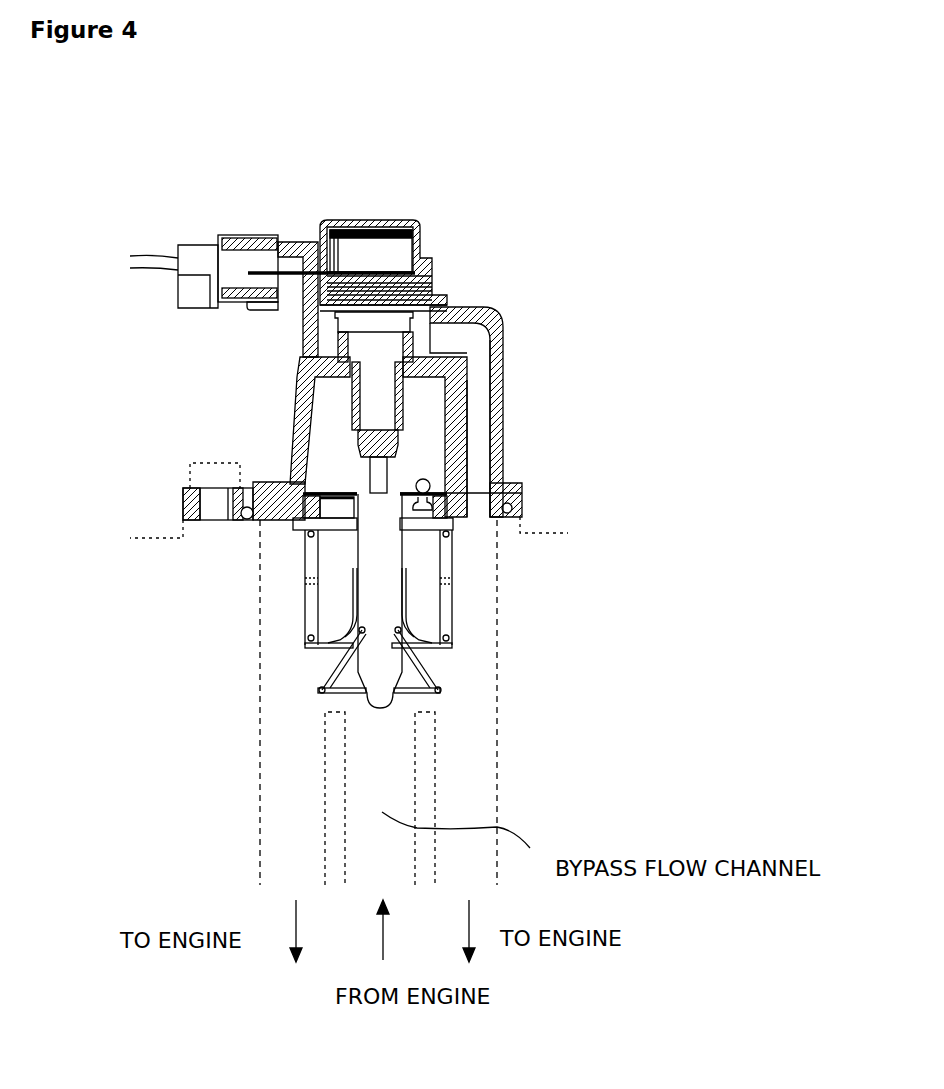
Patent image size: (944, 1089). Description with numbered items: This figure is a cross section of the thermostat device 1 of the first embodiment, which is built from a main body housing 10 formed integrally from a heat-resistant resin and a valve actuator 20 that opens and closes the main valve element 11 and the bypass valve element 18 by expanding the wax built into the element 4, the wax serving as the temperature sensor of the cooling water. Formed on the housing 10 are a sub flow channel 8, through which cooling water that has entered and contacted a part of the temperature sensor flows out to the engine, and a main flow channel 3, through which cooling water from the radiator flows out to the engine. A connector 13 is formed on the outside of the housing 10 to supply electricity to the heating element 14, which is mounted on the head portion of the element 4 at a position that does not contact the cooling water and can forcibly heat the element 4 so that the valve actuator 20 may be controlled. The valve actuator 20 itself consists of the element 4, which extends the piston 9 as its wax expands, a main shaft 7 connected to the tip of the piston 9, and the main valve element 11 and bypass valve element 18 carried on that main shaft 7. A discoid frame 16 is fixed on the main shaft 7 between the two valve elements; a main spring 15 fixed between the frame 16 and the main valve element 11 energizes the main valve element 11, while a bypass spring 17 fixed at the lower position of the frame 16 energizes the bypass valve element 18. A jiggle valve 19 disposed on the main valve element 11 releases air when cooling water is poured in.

The thermostat device 1 is at (620, 247).
The main flow channel 3 is at (273, 443).
The element 4 is at (332, 312).
The main shaft 7 is at (392, 553).
The sub flow channel 8 is at (480, 408).
The piston 9 is at (372, 478).
The main body housing 10 is at (472, 310).
The main valve element 11 is at (305, 520).
The connector 13 is at (248, 235).
The heating element 14 is at (400, 219).
The main spring 15 is at (305, 612).
The frame 16 is at (452, 645).
The bypass spring 17 is at (330, 672).
The bypass valve element 18 is at (440, 707).
The jiggle valve 19 is at (430, 482).
The valve actuator 20 is at (475, 565).